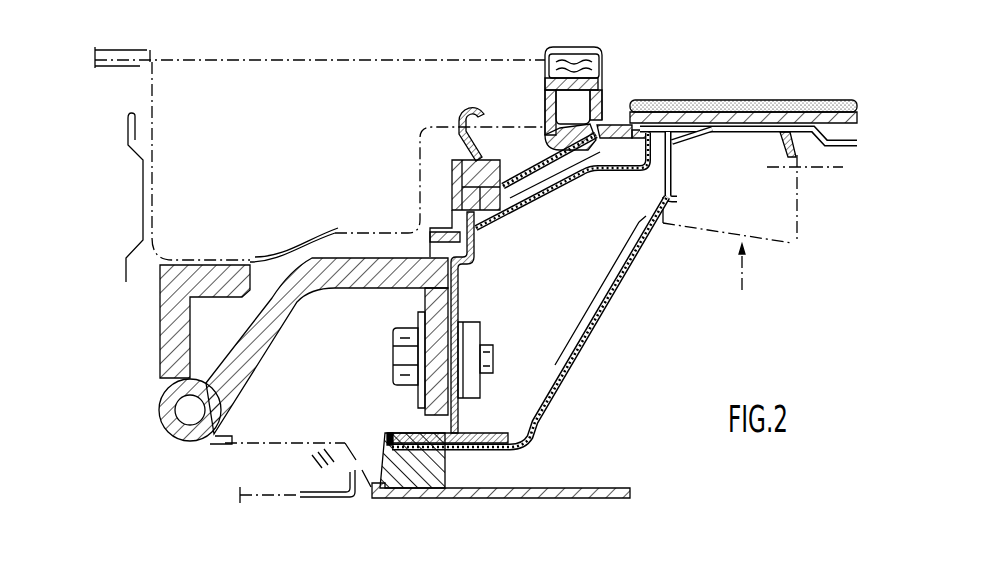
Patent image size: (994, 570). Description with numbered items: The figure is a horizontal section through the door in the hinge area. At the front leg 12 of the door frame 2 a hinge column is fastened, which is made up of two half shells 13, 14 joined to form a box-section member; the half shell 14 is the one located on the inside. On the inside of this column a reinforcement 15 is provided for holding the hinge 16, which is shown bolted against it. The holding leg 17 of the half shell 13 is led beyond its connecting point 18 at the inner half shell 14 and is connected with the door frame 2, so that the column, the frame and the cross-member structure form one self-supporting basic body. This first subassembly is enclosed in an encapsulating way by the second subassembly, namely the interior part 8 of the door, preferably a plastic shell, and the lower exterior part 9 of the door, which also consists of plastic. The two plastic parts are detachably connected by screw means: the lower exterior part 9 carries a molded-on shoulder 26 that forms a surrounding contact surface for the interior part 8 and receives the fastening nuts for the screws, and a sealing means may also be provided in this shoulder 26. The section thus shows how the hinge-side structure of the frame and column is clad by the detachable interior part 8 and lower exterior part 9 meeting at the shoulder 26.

The door frame 2 is at (727, 260).
The interior part of the door 8 is at (834, 112).
The lower exterior part of the door 9 is at (575, 488).
The leg of the door frame 12 is at (797, 192).
The half shell 13 is at (610, 172).
The half shell 14 is at (565, 373).
The reinforcement 15 is at (460, 300).
The hinge 16 is at (433, 306).
The holding leg 17 is at (788, 100).
The connecting point 18 is at (689, 104).
The molded-on shoulder 26 is at (418, 478).